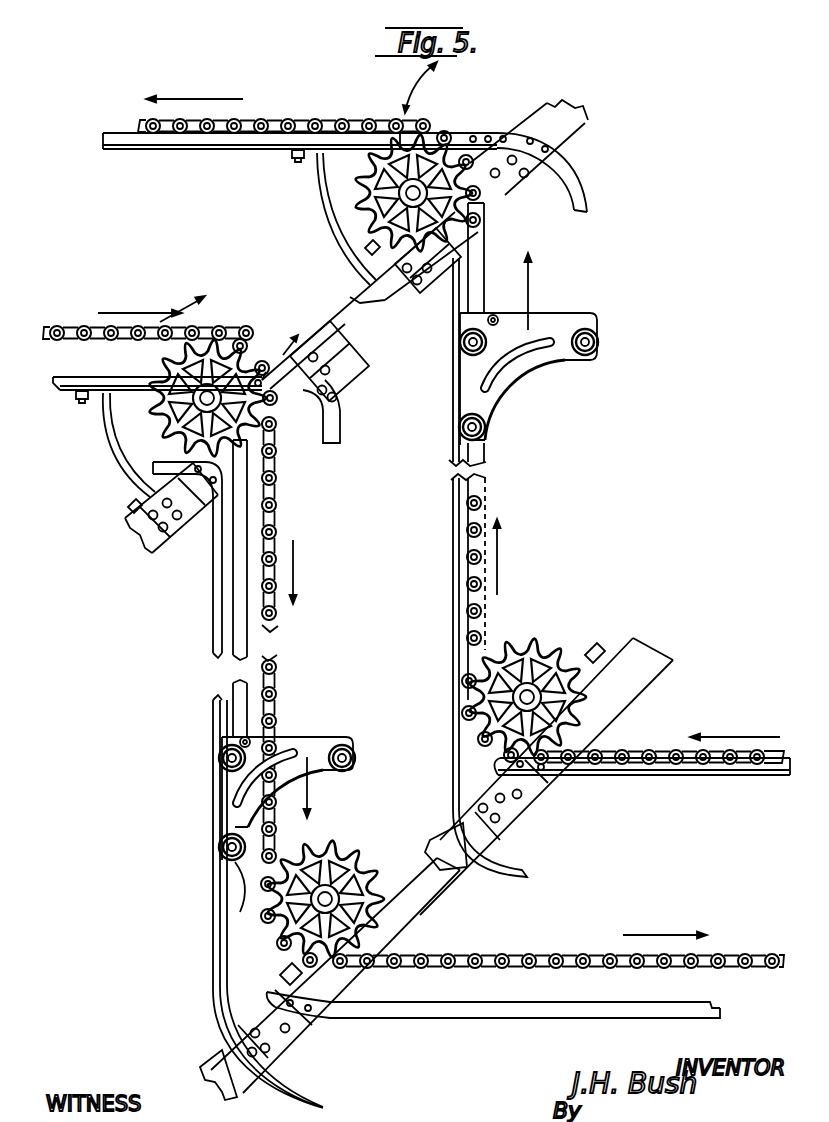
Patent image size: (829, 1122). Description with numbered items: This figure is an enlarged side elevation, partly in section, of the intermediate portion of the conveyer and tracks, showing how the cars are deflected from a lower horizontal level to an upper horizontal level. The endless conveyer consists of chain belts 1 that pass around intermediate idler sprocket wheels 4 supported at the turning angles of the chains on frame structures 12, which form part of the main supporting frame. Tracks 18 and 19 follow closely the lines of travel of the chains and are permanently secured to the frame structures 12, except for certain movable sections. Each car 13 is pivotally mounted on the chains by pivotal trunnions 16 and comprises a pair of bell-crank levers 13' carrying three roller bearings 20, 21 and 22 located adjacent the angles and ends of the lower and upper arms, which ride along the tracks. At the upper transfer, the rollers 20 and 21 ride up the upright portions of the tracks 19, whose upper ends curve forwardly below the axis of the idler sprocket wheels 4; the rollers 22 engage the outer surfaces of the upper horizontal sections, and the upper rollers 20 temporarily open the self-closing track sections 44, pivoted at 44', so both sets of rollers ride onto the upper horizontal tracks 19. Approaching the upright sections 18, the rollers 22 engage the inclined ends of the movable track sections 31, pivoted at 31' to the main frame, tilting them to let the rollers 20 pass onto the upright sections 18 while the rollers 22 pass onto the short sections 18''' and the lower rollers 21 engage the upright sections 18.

The endless chain belts 1 is at (250, 122).
The intermediate idler sprocket wheels 4 is at (358, 192).
The frame structures 12 is at (342, 347).
The cars 13 is at (409, 593).
The bell-crank levers 13' is at (409, 596).
The pivotal trunnions 16 is at (495, 314).
The tracks 18 is at (386, 742).
The short track sections 18''' is at (344, 413).
The tracks 19 is at (264, 149).
The roller bearings 20 is at (459, 343).
The roller bearings 21 is at (458, 428).
The roller bearings 22 is at (600, 342).
The movable track sections 31 is at (246, 342).
The pivot 31' is at (273, 349).
The self-closing track sections 44 is at (453, 125).
The pivot 44' is at (529, 156).